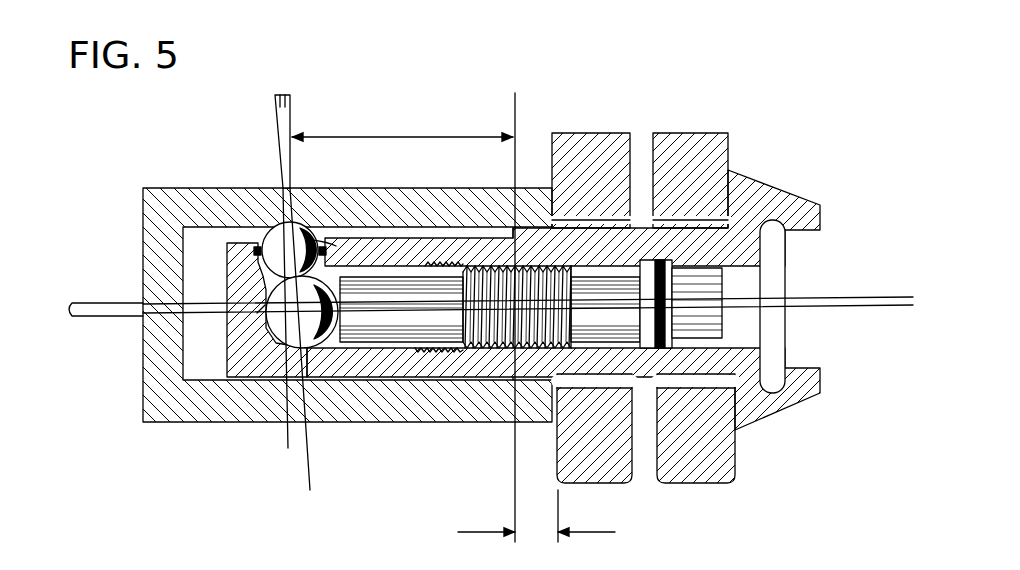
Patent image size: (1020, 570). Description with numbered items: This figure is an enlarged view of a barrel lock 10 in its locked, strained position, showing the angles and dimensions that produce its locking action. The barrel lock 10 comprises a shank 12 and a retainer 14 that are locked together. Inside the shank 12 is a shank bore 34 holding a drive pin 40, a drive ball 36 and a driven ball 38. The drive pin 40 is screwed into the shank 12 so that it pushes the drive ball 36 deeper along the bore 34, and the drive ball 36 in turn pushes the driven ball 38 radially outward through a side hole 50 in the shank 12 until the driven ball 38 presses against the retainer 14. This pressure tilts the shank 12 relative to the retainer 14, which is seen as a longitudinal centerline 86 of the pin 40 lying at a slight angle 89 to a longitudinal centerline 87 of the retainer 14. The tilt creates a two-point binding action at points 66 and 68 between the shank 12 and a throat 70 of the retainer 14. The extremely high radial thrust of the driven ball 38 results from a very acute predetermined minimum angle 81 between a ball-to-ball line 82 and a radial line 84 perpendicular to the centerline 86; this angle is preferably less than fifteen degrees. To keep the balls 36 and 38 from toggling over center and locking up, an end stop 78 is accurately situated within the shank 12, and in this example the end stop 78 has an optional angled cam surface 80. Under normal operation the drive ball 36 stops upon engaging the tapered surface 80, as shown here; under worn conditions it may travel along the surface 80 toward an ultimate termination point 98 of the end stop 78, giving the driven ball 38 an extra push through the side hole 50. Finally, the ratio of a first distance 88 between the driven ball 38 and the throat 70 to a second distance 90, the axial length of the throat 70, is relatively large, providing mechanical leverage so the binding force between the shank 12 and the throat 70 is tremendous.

The barrel lock 10 is at (813, 147).
The shank 12 is at (423, 240).
The retainer 14 is at (232, 422).
The shank bore 34 is at (384, 297).
The drive ball 36 is at (313, 343).
The driven ball 38 is at (312, 240).
The drive pin 40 is at (402, 330).
The side hole 50 is at (262, 230).
The binding point 66 is at (540, 228).
The binding point 68 is at (513, 378).
The throat 70 is at (497, 243).
The end stop 78 is at (262, 245).
The angled cam surface 80 is at (287, 400).
The predetermined minimum angle 81 is at (280, 95).
The ball-to-ball line 82 is at (275, 127).
The radial line 84 is at (290, 118).
The longitudinal centerline of pin 86 is at (87, 318).
The longitudinal centerline of retainer 87 is at (108, 303).
The first distance 88 is at (430, 135).
The angle 89 is at (72, 310).
The second distance 90 is at (588, 532).
The ultimate termination point 98 is at (257, 313).